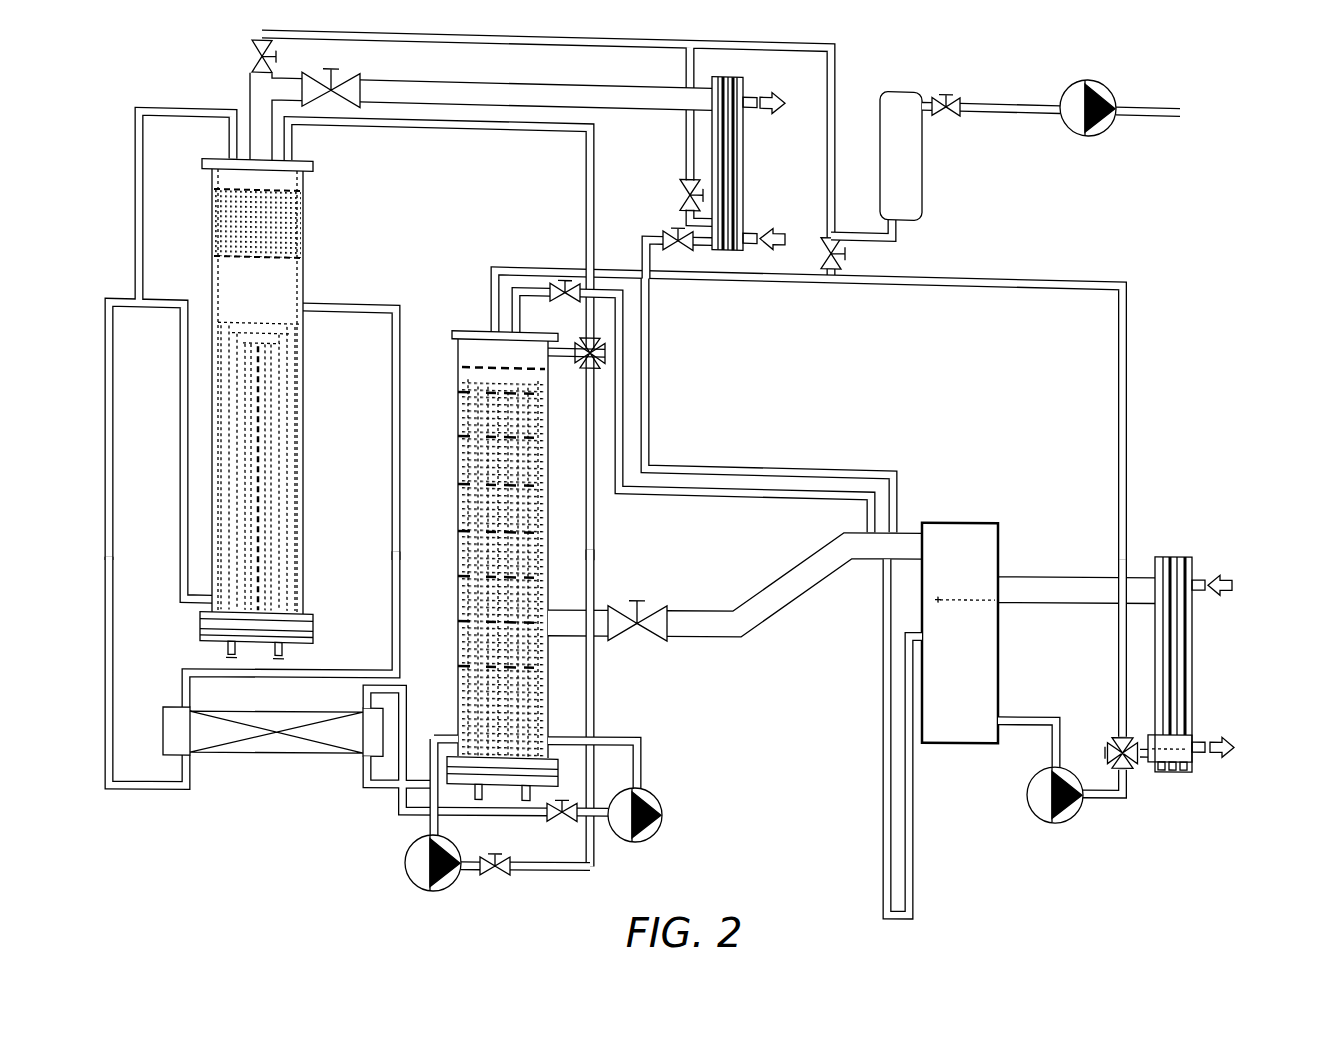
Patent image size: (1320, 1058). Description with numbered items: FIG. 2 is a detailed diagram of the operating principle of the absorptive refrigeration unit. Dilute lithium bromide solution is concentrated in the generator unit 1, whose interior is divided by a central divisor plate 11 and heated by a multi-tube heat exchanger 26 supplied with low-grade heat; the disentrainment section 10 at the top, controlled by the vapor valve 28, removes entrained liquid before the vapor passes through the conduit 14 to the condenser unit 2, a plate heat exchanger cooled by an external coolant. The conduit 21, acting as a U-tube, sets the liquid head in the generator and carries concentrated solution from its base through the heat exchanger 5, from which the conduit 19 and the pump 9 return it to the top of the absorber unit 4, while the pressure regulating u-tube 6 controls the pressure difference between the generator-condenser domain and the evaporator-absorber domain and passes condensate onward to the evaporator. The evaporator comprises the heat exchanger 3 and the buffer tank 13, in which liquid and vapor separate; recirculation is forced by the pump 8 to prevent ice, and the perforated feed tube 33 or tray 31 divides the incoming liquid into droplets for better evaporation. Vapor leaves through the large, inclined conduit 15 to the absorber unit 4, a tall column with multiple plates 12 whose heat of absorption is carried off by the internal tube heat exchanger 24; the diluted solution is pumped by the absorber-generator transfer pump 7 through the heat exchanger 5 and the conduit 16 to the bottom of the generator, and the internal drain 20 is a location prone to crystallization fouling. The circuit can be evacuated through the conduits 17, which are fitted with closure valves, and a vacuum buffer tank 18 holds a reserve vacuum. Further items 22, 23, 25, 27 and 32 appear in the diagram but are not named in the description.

The generator unit 1 is at (305, 233).
The condenser unit 2 is at (708, 125).
The evaporator unit 3 is at (1178, 550).
The absorber unit 4 is at (548, 542).
The heat exchanger 5 is at (265, 755).
The pressure regulating u-tube 6 is at (913, 780).
The absorber-generator transfer pump 7 is at (655, 796).
The pump 8 is at (1075, 809).
The pump 9 is at (413, 846).
The disentrainment section 10 is at (228, 216).
The central divisor plate 11 is at (257, 387).
The plates 12 is at (530, 357).
The buffer tank 13 is at (960, 516).
The conduit 14 is at (1160, 464).
The inclined conduit 15 is at (773, 612).
The conduit 16 is at (180, 451).
The conduits 17 is at (717, 213).
The vacuum buffer tank 18 is at (922, 138).
The conduit 19 is at (365, 780).
The internal drain 20 is at (305, 205).
The conduit 21 is at (392, 349).
The valve 22 is at (668, 222).
The valve 23 is at (560, 530).
The internal tube heat exchanger 24 is at (530, 467).
The pump 25 is at (1075, 109).
The multi-tube heat exchanger 26 is at (282, 446).
The line 27 is at (295, 135).
The vapor valve 28 is at (640, 613).
The perforated tray 31 is at (1190, 751).
The valve 32 is at (333, 80).
The perforated feed tube 33 is at (960, 594).